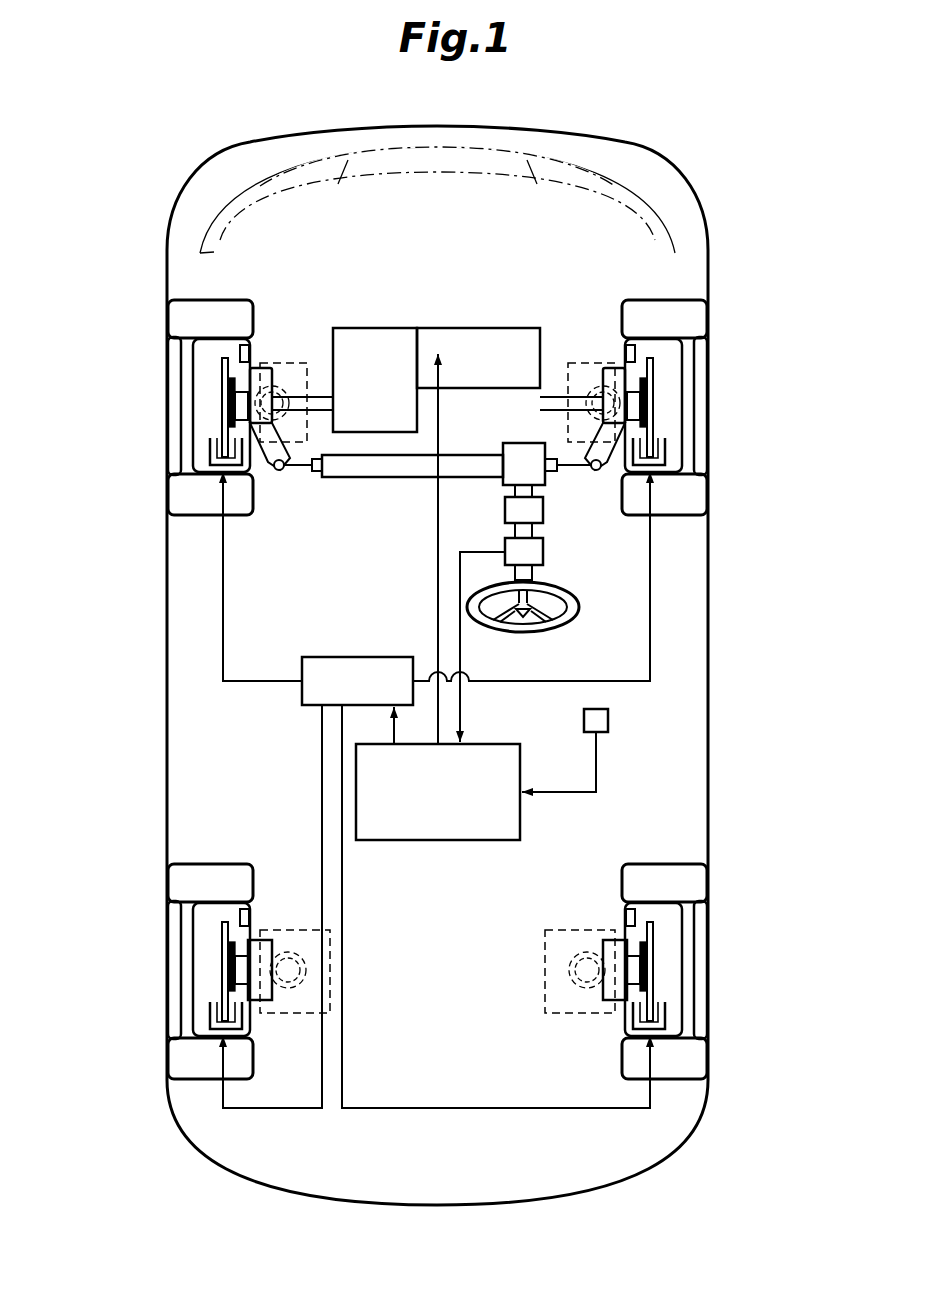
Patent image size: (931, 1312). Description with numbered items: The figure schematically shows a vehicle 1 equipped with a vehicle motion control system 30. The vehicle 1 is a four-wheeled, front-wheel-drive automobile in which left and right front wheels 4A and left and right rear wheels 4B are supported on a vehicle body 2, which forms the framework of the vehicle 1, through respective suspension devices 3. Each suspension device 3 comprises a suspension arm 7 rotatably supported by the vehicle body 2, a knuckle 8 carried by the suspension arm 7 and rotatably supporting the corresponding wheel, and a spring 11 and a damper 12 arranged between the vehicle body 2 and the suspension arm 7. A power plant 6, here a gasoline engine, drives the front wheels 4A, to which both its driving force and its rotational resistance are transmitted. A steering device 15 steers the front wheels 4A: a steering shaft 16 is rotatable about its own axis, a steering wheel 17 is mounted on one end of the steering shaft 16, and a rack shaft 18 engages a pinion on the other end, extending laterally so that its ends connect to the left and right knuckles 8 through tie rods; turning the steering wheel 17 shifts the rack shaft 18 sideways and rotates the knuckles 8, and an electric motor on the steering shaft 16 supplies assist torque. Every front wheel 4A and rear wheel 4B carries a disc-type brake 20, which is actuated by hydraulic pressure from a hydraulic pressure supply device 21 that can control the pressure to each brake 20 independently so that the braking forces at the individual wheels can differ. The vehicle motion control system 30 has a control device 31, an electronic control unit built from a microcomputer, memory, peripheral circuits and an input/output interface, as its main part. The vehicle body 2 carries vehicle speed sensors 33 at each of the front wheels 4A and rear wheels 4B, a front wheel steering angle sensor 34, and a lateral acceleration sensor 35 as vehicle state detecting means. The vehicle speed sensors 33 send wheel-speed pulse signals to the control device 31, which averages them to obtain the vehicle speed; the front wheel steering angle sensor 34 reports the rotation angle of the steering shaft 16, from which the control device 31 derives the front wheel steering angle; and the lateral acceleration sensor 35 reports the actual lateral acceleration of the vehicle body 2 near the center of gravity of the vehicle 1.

The vehicle 1 is at (213, 127).
The vehicle body 2 is at (630, 170).
The suspension device 3 is at (298, 318).
The front wheel 4A is at (182, 318).
The rear wheel 4B is at (180, 883).
The power plant 6 is at (472, 328).
The suspension arm 7 is at (292, 363).
The knuckle 8 is at (270, 367).
The spring 11 is at (270, 390).
The damper 12 is at (278, 417).
The steering device 15 is at (360, 490).
The steering shaft 16 is at (527, 532).
The steering wheel 17 is at (557, 623).
The rack shaft 18 is at (395, 472).
The brake 20 is at (215, 455).
The hydraulic pressure supply device 21 is at (357, 657).
The vehicle motion control system 30 is at (440, 848).
The control device 31 is at (476, 842).
The vehicle speed sensor 33 is at (244, 345).
The front wheel steering angle sensor 34 is at (544, 548).
The lateral acceleration sensor 35 is at (608, 721).